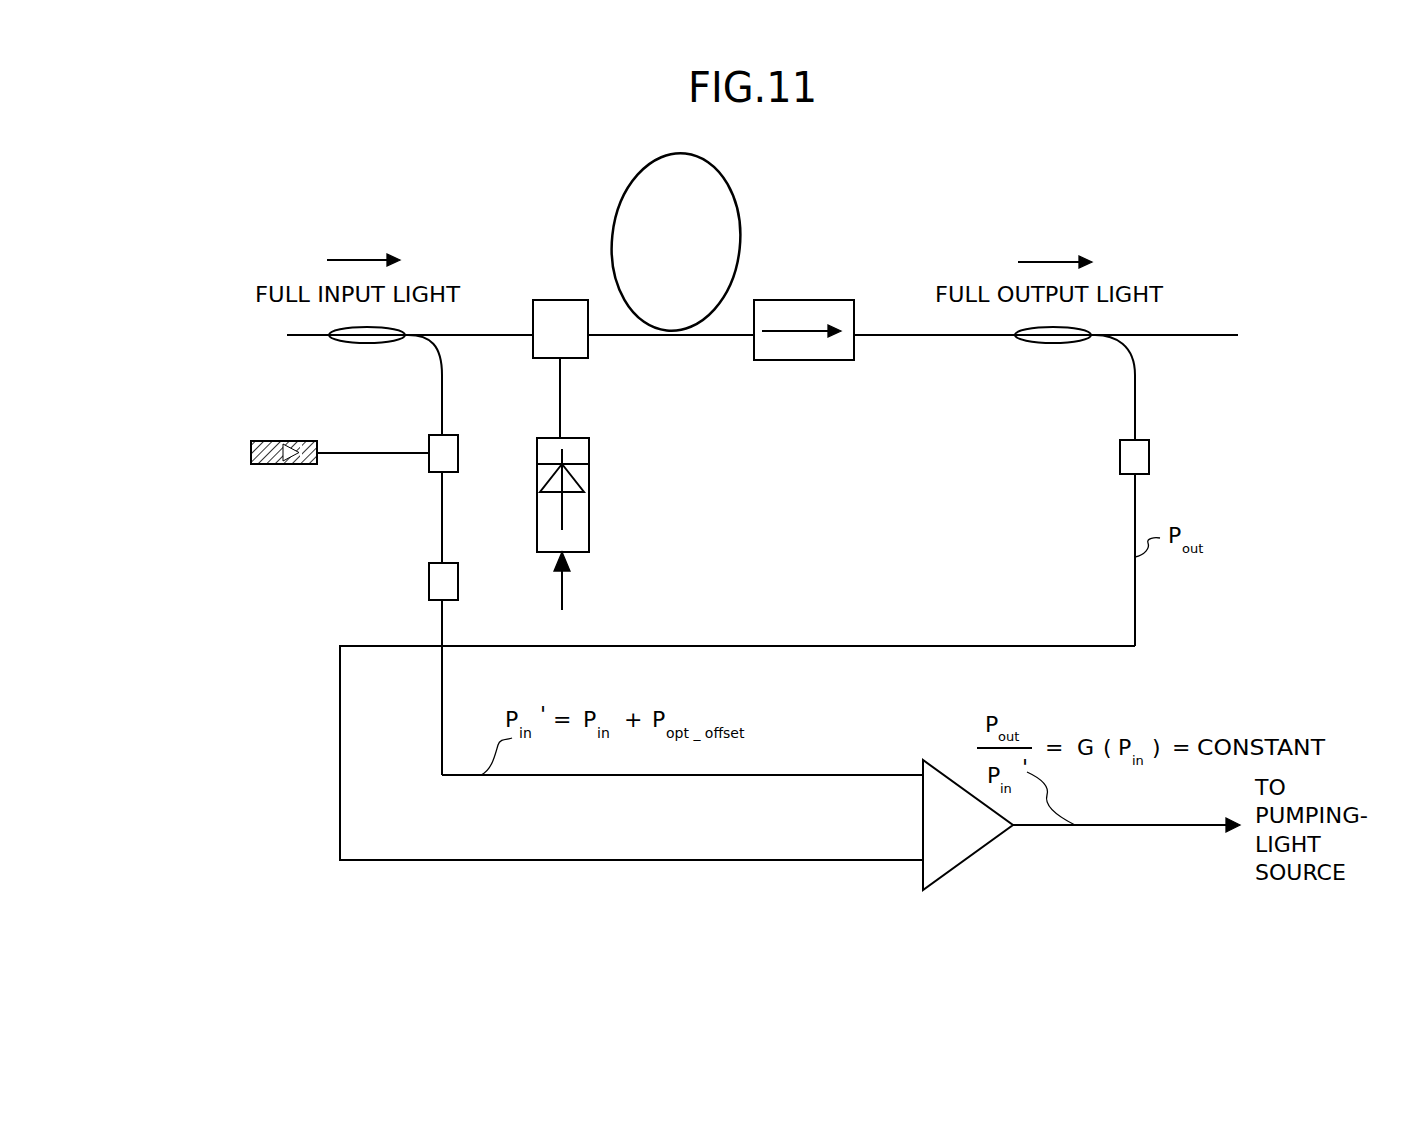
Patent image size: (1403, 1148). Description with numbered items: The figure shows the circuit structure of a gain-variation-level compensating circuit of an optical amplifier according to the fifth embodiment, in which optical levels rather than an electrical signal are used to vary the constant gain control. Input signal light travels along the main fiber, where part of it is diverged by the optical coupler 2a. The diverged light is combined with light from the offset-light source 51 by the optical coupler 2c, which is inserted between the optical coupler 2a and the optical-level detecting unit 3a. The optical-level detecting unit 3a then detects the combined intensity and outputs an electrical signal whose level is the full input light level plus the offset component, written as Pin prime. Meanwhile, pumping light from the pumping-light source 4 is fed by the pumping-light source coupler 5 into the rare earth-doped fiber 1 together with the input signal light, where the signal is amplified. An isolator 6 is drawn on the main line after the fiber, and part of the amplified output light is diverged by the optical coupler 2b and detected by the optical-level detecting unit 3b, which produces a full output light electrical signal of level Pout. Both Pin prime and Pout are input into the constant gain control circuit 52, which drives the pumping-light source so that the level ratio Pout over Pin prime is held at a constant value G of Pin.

The rare earth-doped fiber 1 is at (727, 248).
The optical isolator 6 is at (835, 310).
The pumping-light source coupler 5 is at (566, 328).
The pumping-light source 4 is at (577, 513).
The optical coupler 2a is at (358, 337).
The optical coupler 2b is at (1043, 336).
The optical coupler 2c is at (442, 457).
The optical-level detecting unit 3a is at (433, 578).
The optical-level detecting unit 3b is at (1133, 448).
The offset-light source 51 is at (296, 461).
The constant gain control circuit 52 is at (965, 835).